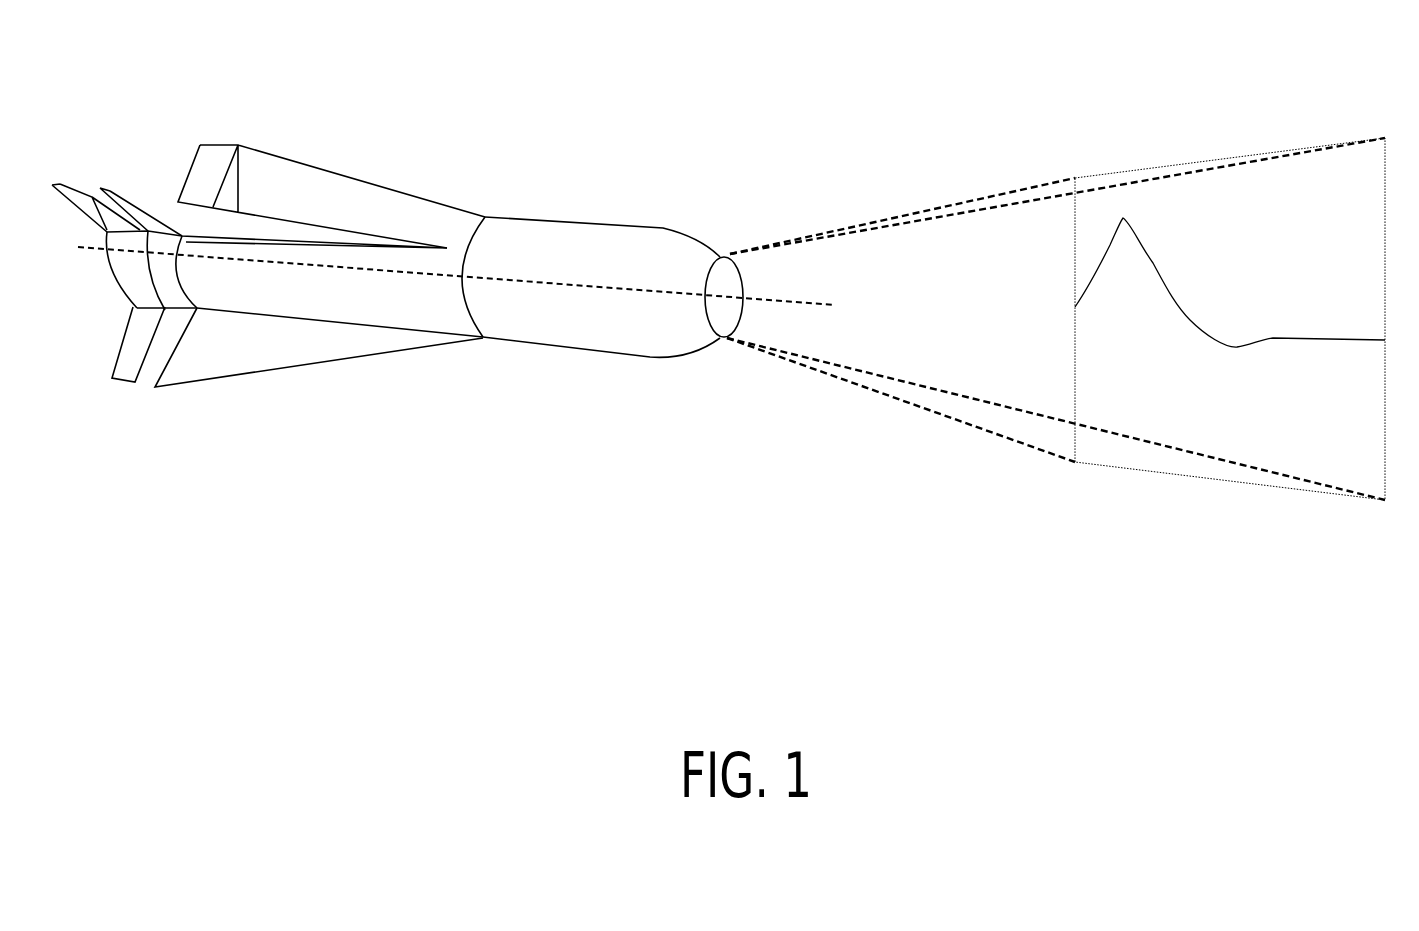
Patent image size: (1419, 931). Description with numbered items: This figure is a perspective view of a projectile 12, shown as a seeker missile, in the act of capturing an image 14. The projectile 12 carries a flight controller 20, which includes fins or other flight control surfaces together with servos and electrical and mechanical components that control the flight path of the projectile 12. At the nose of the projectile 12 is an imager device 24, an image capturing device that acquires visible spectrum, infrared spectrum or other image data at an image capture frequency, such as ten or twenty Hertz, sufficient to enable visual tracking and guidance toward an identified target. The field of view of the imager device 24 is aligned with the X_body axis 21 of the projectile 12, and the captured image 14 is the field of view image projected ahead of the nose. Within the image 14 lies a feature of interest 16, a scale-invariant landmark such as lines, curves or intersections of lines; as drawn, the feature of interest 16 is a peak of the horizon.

The projectile 12 is at (419, 267).
The image 14 is at (1073, 263).
The feature of interest 16 is at (1127, 217).
The flight controller 20 is at (118, 380).
The X_body axis 21 is at (90, 247).
The imager device 24 is at (730, 253).